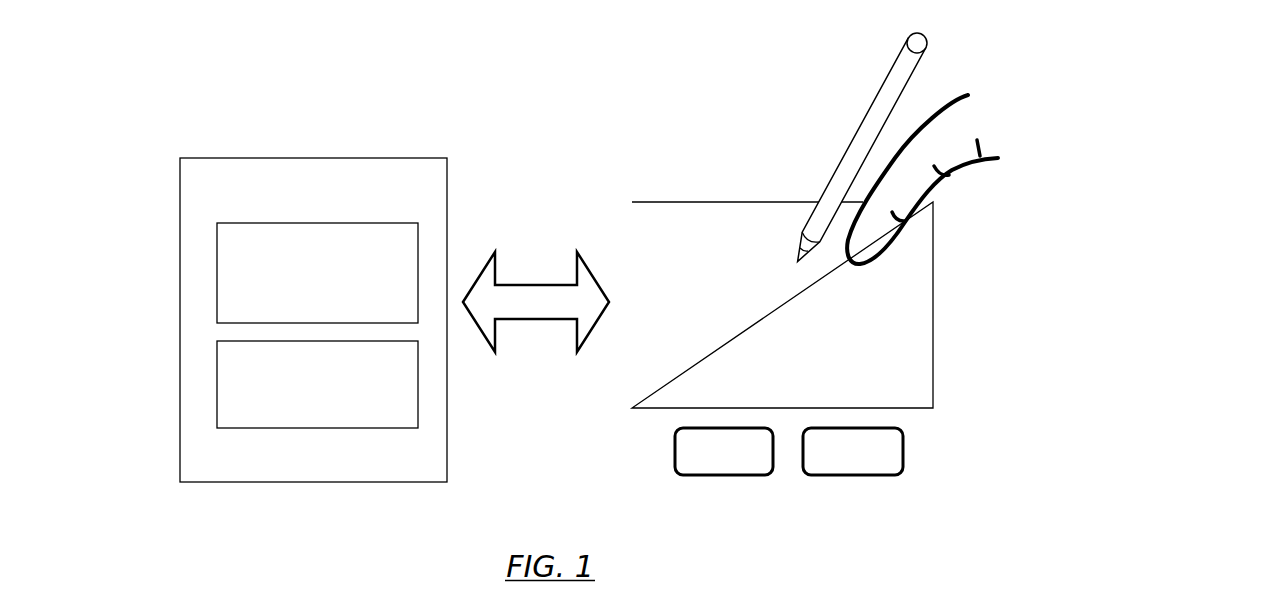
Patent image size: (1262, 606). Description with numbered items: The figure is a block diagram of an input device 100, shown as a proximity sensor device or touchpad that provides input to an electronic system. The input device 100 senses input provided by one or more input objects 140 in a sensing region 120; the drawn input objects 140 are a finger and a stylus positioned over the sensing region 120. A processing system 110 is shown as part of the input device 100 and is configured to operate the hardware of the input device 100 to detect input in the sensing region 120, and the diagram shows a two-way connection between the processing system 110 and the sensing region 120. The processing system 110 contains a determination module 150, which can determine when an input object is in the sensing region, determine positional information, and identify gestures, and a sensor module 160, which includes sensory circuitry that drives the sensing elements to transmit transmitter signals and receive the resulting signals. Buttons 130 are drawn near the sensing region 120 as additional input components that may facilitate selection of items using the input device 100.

The input device 100 is at (315, 97).
The processing system 110 is at (180, 240).
The sensing region 120 is at (933, 277).
The buttons 130 is at (758, 475).
The input object 140 is at (993, 19).
The determination module 150 is at (298, 256).
The sensor module 160 is at (298, 382).